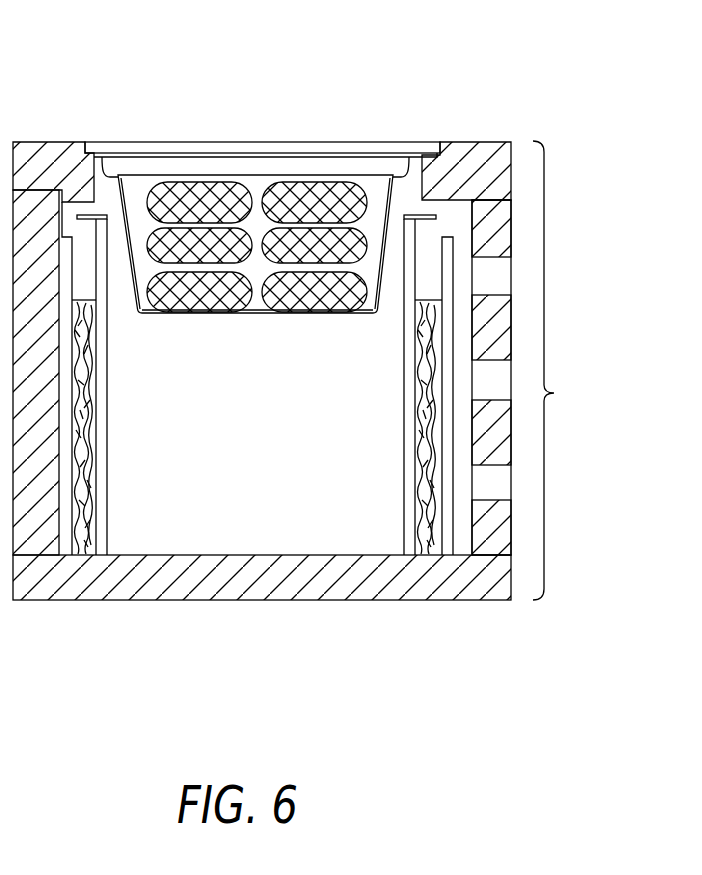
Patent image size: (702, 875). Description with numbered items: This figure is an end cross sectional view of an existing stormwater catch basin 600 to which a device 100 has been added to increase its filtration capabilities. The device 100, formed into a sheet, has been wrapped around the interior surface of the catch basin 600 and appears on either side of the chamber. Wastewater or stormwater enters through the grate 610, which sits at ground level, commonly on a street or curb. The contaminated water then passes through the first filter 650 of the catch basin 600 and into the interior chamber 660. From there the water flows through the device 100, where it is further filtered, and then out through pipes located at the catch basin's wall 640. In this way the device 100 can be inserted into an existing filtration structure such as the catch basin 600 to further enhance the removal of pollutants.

The catch basin 600 is at (567, 370).
The grate 610 is at (388, 152).
The catch basin's wall 640 is at (493, 550).
The first filter 650 is at (123, 233).
The interior chamber 660 is at (353, 491).
The device 100 is at (93, 555).